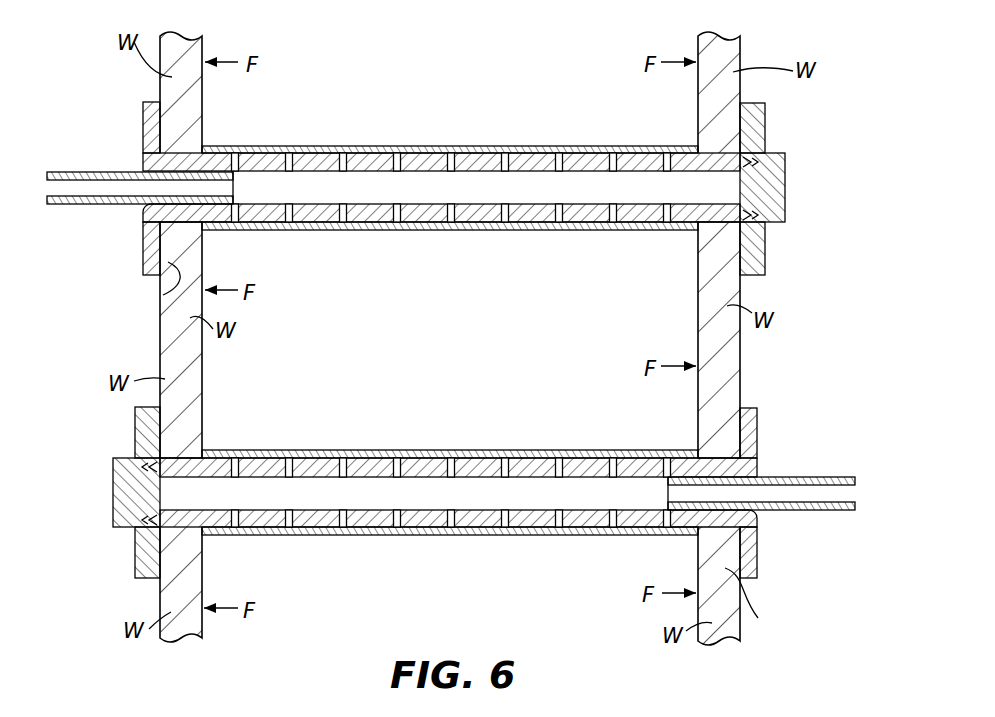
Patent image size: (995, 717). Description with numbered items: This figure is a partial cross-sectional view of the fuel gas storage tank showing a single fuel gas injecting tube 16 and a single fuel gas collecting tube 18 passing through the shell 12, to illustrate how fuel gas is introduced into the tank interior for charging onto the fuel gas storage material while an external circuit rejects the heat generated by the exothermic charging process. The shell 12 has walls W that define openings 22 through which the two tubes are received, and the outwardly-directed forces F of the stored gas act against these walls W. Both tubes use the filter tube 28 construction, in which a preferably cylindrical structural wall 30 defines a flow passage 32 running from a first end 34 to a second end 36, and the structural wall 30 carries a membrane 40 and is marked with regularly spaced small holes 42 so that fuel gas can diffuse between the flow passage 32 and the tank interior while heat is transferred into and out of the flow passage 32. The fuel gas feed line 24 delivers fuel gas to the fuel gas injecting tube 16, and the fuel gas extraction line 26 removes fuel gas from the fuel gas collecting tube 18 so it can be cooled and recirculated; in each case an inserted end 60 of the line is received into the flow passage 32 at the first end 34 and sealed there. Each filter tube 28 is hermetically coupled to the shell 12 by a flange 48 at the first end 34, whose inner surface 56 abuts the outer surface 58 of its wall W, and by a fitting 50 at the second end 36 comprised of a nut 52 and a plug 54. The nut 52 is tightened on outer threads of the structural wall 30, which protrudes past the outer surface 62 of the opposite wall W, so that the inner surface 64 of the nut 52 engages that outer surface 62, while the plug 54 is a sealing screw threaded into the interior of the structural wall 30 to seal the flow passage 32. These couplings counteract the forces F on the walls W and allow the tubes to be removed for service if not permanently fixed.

The shell 12 is at (744, 46).
The fuel gas injecting tube 16 is at (376, 143).
The fuel gas collecting tube 18 is at (353, 540).
The openings 22 is at (209, 158).
The fuel gas feed line 24 is at (77, 172).
The fuel gas extraction line 26 is at (828, 477).
The filter tube 28 is at (424, 234).
The structural wall 30 is at (312, 231).
The flow passage 32 is at (441, 200).
The first end 34 is at (161, 163).
The second end 36 is at (759, 166).
The membrane 40 is at (564, 148).
The holes 42 is at (560, 152).
The flange 48 is at (151, 253).
The fitting 50 is at (767, 105).
The nut 52 is at (752, 118).
The plug 54 is at (771, 191).
The inner surface of the flange 56 is at (163, 295).
The outer surface of the wall 58 is at (162, 287).
The inserted end 60 is at (236, 180).
The outer surface of the wall 62 is at (742, 295).
The inner surface of the nut 64 is at (739, 246).